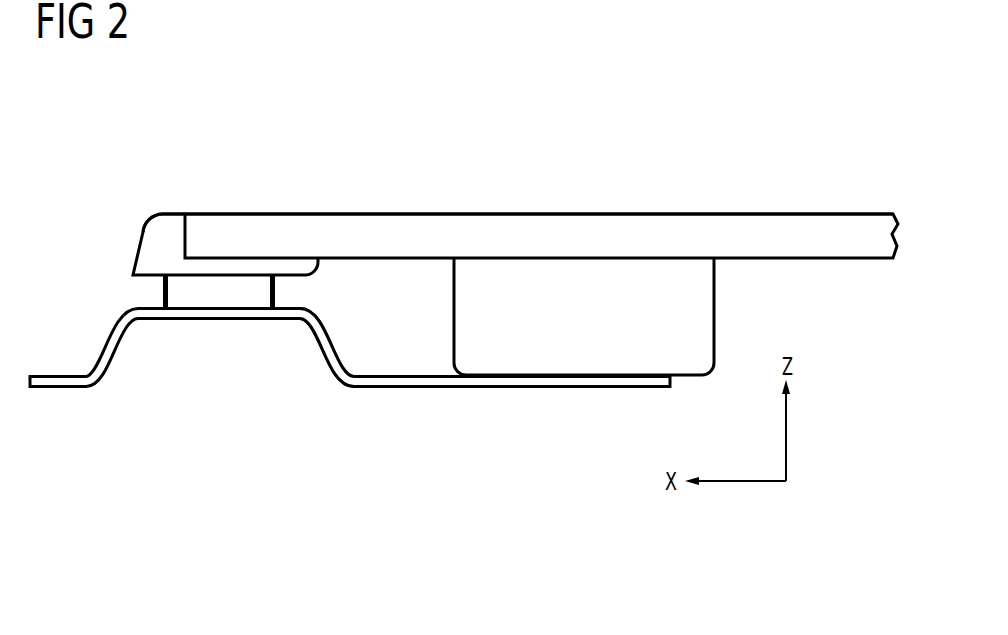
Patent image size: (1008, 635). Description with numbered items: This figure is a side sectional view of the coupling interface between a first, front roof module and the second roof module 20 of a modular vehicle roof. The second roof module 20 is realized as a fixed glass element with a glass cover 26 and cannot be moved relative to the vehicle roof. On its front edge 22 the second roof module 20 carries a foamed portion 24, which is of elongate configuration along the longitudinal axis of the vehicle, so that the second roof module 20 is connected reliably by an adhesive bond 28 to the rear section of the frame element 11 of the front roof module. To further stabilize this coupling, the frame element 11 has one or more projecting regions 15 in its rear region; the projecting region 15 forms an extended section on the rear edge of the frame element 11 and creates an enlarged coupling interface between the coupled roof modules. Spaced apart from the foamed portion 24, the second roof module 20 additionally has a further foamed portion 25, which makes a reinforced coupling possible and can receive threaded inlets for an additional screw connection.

The frame element 11 is at (70, 413).
The projecting region 15 is at (342, 380).
The second roof module 20 is at (282, 98).
The front edge 22 is at (185, 192).
The foamed portion 24 is at (155, 243).
The further foamed portion 25 is at (572, 357).
The glass cover 26 is at (410, 232).
The adhesive bond 28 is at (215, 288).